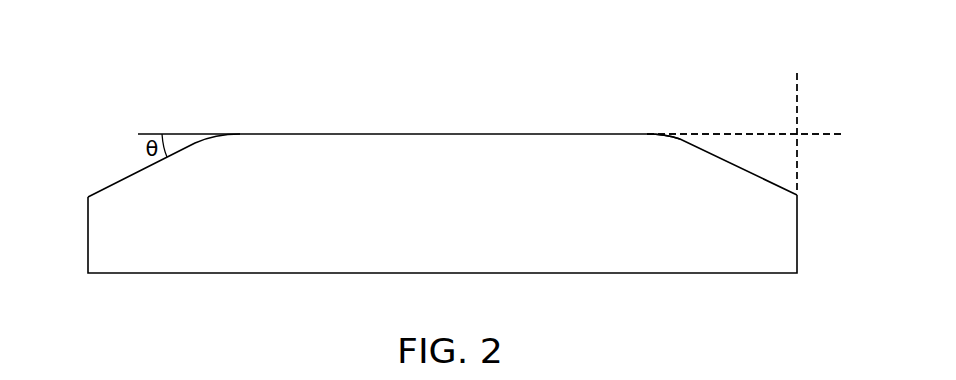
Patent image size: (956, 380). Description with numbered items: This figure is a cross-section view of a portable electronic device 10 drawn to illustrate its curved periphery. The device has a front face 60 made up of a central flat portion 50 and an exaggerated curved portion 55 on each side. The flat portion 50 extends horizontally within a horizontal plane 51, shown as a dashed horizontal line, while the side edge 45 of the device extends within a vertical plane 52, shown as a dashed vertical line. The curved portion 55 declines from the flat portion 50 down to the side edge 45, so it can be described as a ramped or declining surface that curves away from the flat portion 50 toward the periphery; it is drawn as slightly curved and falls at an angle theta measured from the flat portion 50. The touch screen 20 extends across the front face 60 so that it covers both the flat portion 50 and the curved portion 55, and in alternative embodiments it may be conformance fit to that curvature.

The portable electronic device 10 is at (133, 124).
The touch screen 20 is at (292, 133).
The side edge 45 is at (88, 245).
The flat portion 50 is at (613, 127).
The horizontal plane 51 is at (826, 137).
The vertical plane 52 is at (798, 100).
The curved portion 55 is at (113, 158).
The front face 60 is at (750, 50).